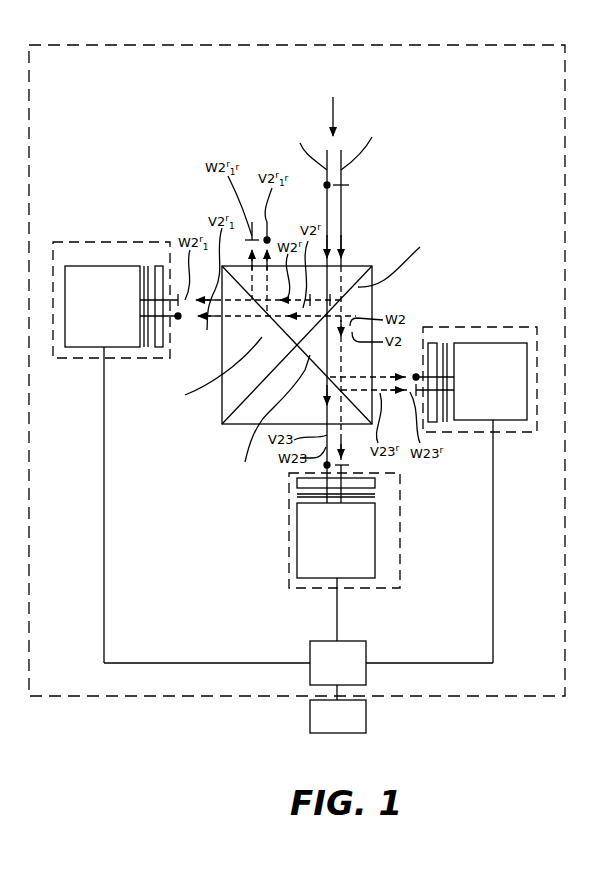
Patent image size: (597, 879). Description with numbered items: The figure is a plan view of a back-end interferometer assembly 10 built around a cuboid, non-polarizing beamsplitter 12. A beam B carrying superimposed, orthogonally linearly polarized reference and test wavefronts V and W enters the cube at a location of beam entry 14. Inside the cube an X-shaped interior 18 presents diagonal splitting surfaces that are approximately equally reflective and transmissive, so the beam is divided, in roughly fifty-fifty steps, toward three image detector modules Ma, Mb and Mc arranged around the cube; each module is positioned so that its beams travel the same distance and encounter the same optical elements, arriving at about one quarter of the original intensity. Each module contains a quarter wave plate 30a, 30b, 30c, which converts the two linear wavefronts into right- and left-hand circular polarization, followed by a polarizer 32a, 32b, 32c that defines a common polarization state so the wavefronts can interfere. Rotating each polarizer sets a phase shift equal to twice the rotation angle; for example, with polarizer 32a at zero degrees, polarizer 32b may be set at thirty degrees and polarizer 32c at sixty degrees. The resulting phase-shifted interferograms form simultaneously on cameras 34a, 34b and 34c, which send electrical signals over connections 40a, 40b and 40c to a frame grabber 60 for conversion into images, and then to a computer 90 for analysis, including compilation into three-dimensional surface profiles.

The assembly 10 is at (297, 370).
The beamsplitter 12 is at (222, 413).
The location of beam entry 14 is at (355, 262).
The X-shaped interior 18 is at (250, 385).
The quarter wave plate 30a is at (158, 264).
The quarter wave plate 30b is at (433, 341).
The quarter wave plate 30c is at (380, 483).
The polarizer 32a is at (146, 264).
The polarizer 32b is at (448, 341).
The polarizer 32c is at (380, 497).
The camera 34a is at (88, 264).
The camera 34b is at (503, 341).
The camera 34c is at (400, 572).
The connection 40a is at (245, 663).
The connection 40b is at (423, 663).
The connection 40c is at (337, 628).
The frame grabber 60 is at (300, 676).
The computer 90 is at (302, 725).